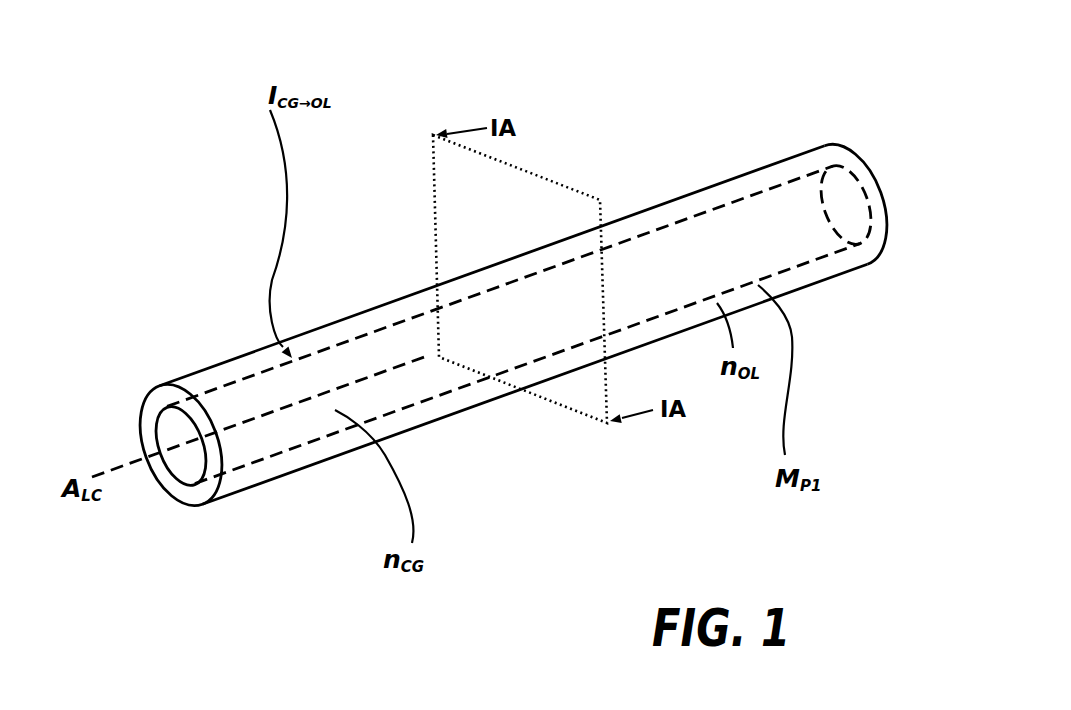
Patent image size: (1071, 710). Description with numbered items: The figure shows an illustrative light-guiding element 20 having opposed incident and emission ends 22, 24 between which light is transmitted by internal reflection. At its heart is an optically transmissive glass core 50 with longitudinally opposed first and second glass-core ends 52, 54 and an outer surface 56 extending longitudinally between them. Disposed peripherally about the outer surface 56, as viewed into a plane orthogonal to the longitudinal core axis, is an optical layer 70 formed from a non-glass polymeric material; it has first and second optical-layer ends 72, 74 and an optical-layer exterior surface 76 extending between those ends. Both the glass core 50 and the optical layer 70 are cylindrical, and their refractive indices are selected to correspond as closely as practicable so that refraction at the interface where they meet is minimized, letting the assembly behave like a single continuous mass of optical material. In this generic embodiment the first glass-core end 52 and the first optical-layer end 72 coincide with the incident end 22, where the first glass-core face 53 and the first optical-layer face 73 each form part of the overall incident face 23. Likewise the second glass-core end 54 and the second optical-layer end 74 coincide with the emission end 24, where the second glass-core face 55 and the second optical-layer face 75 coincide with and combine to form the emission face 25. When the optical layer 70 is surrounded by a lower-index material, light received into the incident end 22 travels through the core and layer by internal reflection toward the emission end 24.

The light-guiding element 20 is at (630, 167).
The incident end 22 is at (858, 268).
The incident face 23 is at (862, 187).
The emission end 24 is at (223, 432).
The emission face 25 is at (175, 463).
The optical glass core 50 is at (353, 373).
The first glass-core end 52 is at (828, 248).
The first glass-core face 53 is at (868, 205).
The second glass-core end 54 is at (195, 410).
The second glass-core face 55 is at (158, 434).
The outer surface 56 is at (440, 393).
The optical layer 70 is at (392, 313).
The first optical-layer end 72 is at (815, 153).
The first optical-layer face 73 is at (854, 141).
The second optical-layer end 74 is at (225, 408).
The second optical-layer face 75 is at (206, 448).
The optical-layer exterior surface 76 is at (350, 315).